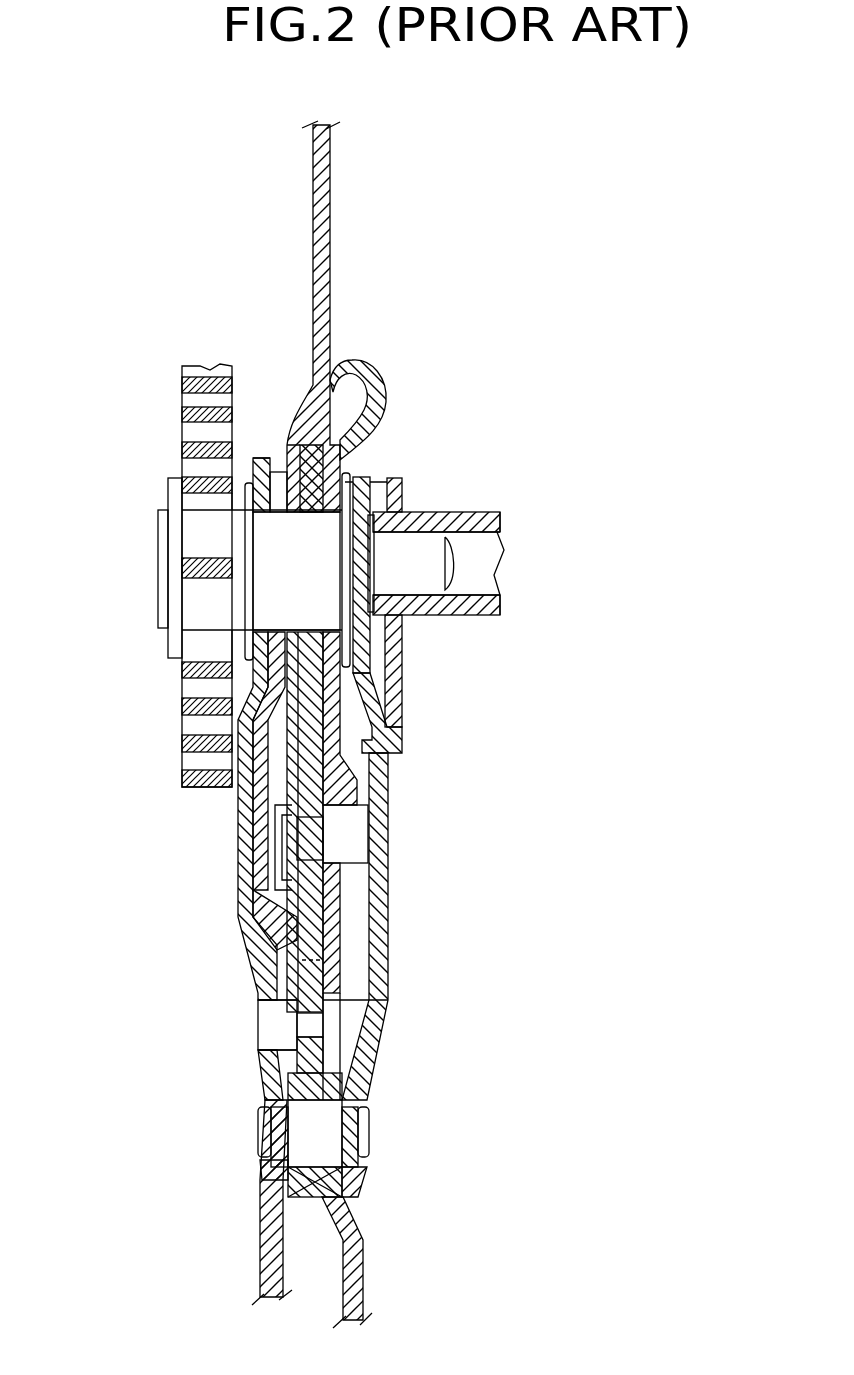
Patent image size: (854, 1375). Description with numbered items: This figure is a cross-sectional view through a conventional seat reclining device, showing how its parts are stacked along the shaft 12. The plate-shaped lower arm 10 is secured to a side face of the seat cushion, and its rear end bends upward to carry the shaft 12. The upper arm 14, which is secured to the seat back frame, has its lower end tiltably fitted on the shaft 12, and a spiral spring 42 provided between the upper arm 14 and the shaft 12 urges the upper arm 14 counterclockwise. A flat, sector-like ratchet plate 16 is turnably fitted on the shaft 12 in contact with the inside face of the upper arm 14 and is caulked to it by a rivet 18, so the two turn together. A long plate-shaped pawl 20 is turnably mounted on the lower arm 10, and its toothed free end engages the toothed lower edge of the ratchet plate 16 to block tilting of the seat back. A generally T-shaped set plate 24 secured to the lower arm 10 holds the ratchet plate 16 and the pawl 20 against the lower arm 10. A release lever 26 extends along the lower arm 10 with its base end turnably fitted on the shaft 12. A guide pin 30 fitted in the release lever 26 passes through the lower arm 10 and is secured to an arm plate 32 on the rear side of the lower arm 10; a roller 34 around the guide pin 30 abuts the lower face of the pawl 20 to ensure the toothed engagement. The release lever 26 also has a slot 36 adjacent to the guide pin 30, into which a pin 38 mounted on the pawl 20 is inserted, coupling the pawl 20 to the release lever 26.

The lower arm 10 is at (362, 1260).
The shaft 12 is at (198, 598).
The upper arm 14 is at (330, 229).
The ratchet plate 16 is at (250, 933).
The rivet 18 is at (350, 835).
The pawl 20 is at (320, 990).
The set plate 24 is at (257, 838).
The release lever 26 is at (260, 1250).
The guide pin 30 is at (330, 1133).
The arm plate 32 is at (383, 1037).
The roller 34 is at (260, 1117).
The slot 36 is at (253, 1057).
The pin 38 is at (278, 1030).
The spiral spring 42 is at (183, 405).